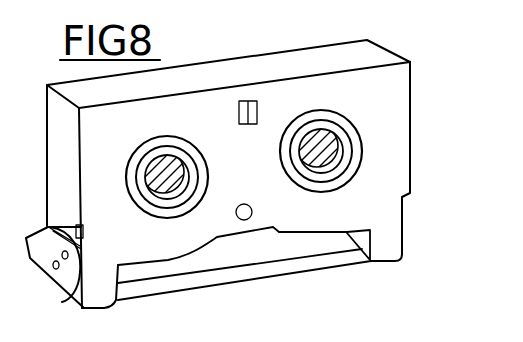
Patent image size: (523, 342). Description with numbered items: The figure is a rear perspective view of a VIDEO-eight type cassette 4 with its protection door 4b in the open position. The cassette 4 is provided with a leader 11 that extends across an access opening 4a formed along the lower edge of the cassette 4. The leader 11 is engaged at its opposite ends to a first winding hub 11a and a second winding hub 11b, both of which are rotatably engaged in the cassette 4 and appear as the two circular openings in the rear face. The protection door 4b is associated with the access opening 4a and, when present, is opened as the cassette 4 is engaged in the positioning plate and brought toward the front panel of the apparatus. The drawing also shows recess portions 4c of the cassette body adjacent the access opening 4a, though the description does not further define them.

The cassette 4 is at (418, 114).
The access opening 4a is at (261, 263).
The protection door 4b is at (33, 240).
The recess in housing front wall 4c is at (172, 266).
The leader 11 is at (299, 264).
The first winding hub 11a is at (183, 184).
The second winding hub 11b is at (341, 155).